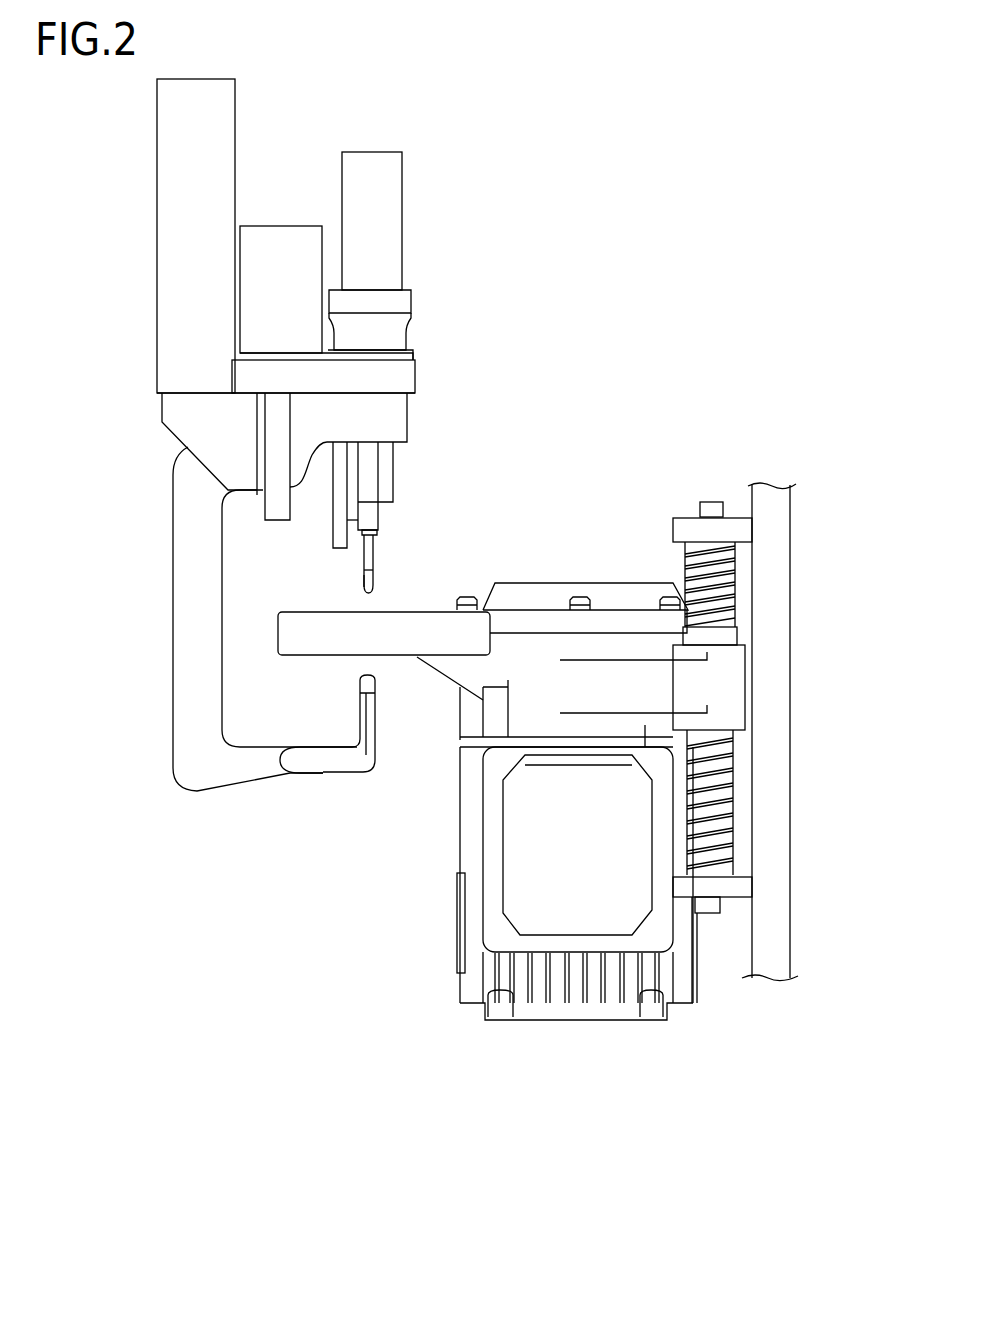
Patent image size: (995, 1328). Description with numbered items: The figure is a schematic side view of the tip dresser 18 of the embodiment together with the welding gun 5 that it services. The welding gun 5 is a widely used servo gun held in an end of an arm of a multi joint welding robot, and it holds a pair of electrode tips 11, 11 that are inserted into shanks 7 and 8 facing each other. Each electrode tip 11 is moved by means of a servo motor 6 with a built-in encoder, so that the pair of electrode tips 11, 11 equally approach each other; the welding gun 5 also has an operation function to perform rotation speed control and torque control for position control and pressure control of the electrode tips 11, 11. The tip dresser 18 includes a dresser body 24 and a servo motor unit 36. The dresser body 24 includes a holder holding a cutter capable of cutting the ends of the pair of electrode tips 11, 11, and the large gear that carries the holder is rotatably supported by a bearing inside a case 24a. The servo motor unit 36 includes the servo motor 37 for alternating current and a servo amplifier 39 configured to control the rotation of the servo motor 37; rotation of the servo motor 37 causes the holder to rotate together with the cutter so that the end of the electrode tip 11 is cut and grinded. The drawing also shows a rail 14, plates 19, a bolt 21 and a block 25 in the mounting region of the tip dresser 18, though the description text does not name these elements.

The welding gun 5 is at (167, 827).
The servo motor 6 is at (283, 237).
The shank 7 is at (377, 560).
The shank 8 is at (360, 763).
The electrode tip 11 is at (363, 587).
The guide rail 14 is at (772, 500).
The tip dresser 18 is at (582, 483).
The support plate 19 is at (690, 526).
The bolt 21 is at (713, 505).
The dresser body 24 is at (542, 583).
The case 24a is at (420, 632).
The slide block 25 is at (735, 692).
The servo motor unit 36 is at (452, 1102).
The servo motor 37 is at (472, 950).
The servo amplifier 39 is at (523, 867).